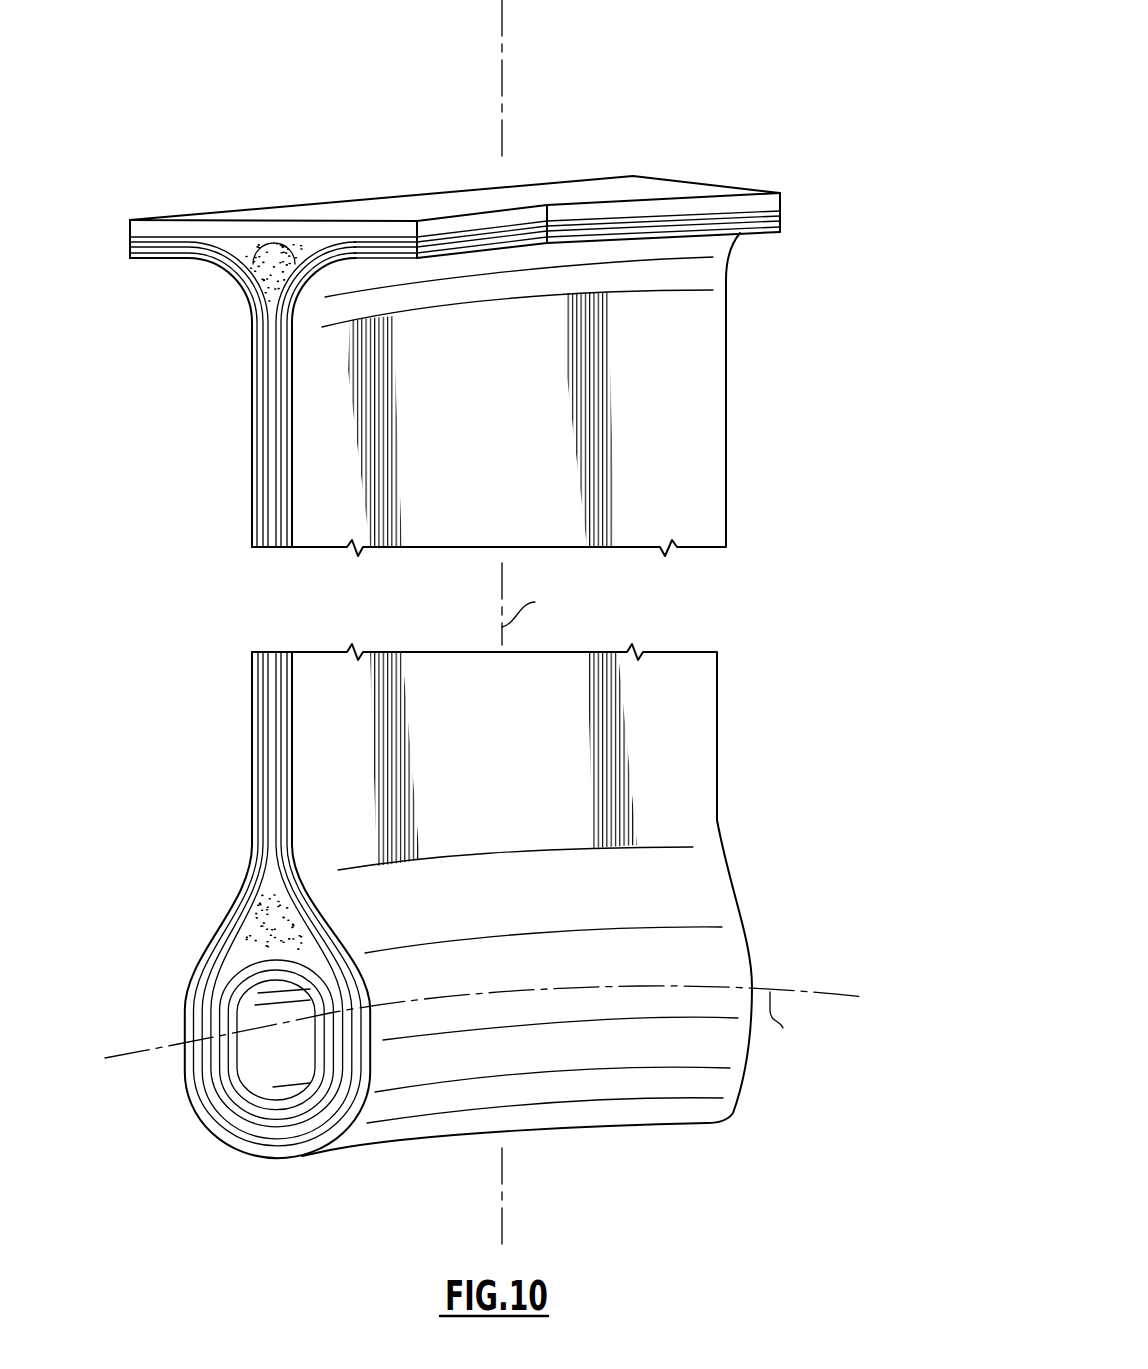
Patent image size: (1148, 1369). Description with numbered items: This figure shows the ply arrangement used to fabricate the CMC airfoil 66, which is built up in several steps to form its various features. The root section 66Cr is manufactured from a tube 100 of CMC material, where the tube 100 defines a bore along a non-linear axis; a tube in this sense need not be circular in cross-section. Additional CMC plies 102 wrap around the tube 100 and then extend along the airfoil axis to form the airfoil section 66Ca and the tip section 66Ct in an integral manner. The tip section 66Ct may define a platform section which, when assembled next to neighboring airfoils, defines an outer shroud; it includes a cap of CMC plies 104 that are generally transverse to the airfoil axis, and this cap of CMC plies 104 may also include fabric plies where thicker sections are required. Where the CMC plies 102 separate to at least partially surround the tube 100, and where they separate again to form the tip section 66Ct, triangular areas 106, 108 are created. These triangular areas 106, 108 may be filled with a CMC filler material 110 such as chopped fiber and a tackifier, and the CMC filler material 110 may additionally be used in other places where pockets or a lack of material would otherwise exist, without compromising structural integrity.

The CMC airfoil 66 is at (515, 626).
The tip section 66Ct is at (527, 208).
The airfoil section 66Ca is at (740, 418).
The root section 66Cr is at (765, 942).
The tube 100 is at (265, 970).
The CMC plies 102 is at (207, 977).
The cap of CMC plies 104 is at (227, 231).
The triangular area 106 is at (260, 870).
The triangular area 108 is at (256, 273).
The CMC filler material 110 is at (280, 253).